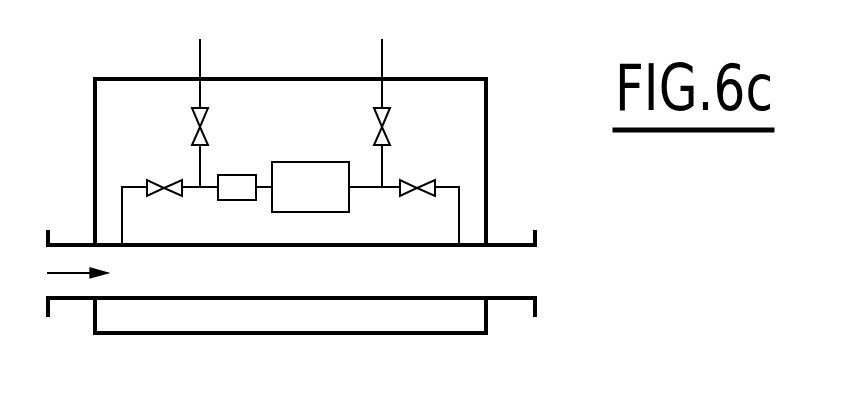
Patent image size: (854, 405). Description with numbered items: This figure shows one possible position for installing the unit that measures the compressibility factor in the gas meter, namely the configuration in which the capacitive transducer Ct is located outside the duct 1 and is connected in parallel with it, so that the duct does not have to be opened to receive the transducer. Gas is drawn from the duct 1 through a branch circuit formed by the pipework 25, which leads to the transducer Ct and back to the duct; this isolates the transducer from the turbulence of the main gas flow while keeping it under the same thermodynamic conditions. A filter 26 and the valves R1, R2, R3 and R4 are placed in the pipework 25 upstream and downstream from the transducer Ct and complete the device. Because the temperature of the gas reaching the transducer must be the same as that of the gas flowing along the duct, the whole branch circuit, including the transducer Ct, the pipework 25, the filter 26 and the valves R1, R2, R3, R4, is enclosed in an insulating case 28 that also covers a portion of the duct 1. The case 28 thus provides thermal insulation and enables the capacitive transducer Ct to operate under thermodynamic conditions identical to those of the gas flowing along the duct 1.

The duct 1 is at (66, 244).
The insulating case 28 is at (95, 92).
The pipework 25 is at (122, 205).
The filter 26 is at (240, 188).
The valve R1 is at (164, 174).
The valve R2 is at (418, 176).
The valve R3 is at (215, 113).
The valve R4 is at (398, 113).
The capacitive transducer Ct is at (310, 187).